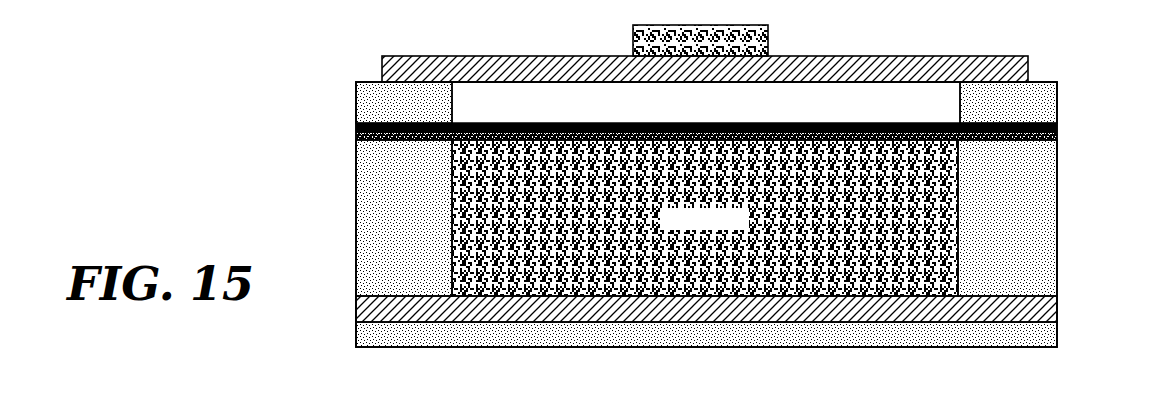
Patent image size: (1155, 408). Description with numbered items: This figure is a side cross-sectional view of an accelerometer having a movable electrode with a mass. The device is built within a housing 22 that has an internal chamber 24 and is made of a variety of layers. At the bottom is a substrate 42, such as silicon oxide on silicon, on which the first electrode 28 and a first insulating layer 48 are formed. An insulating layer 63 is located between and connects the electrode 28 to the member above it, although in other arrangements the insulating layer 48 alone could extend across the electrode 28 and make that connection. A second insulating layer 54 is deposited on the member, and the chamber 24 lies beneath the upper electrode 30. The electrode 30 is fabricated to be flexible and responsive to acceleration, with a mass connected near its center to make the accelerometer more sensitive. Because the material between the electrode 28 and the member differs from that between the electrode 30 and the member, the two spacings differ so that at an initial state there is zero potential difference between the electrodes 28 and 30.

The housing 22 is at (1056, 48).
The electrode 30 is at (1022, 73).
The second insulating layer 54 is at (357, 131).
The internal chamber 24 is at (558, 113).
The first insulating layer 48 is at (365, 192).
The insulating layer 63 is at (945, 175).
The electrode 28 is at (1045, 308).
The substrate 42 is at (1045, 332).